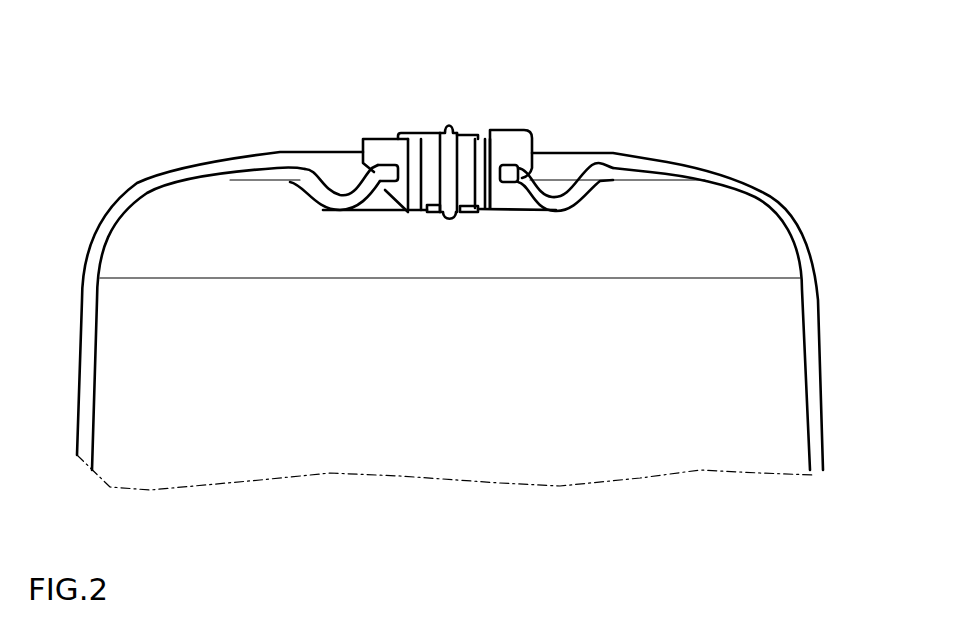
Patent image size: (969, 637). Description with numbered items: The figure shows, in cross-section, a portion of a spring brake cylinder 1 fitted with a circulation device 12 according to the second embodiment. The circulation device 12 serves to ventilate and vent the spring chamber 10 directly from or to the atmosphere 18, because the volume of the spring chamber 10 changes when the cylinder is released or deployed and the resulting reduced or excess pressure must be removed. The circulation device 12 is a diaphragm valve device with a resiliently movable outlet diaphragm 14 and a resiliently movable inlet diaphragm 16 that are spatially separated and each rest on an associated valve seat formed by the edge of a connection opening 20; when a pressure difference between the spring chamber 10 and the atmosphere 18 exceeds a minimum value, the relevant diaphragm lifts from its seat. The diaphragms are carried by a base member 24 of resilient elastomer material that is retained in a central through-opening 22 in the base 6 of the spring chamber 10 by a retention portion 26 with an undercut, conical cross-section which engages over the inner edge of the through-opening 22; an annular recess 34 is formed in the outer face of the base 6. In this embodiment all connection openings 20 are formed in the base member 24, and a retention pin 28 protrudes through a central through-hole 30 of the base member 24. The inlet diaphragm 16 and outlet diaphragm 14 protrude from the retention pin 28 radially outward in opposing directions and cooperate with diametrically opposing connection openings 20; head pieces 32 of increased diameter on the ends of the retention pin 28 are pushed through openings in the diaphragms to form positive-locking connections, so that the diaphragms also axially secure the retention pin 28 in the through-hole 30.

The spring brake cylinder 1 is at (788, 116).
The base 6 is at (677, 168).
The spring chamber 10 is at (662, 351).
The circulation device 12 is at (439, 175).
The outlet diaphragm 14 is at (413, 132).
The inlet diaphragm 16 is at (483, 212).
The atmosphere 18 is at (252, 43).
The connection opening 20 is at (487, 132).
The central through-opening 22 is at (448, 267).
The base member 24 is at (524, 143).
The retention portion 26 is at (397, 190).
The retention pin 28 is at (463, 213).
The central through-hole 30 is at (443, 104).
The head piece 32 is at (450, 125).
The annular recess 34 is at (322, 186).